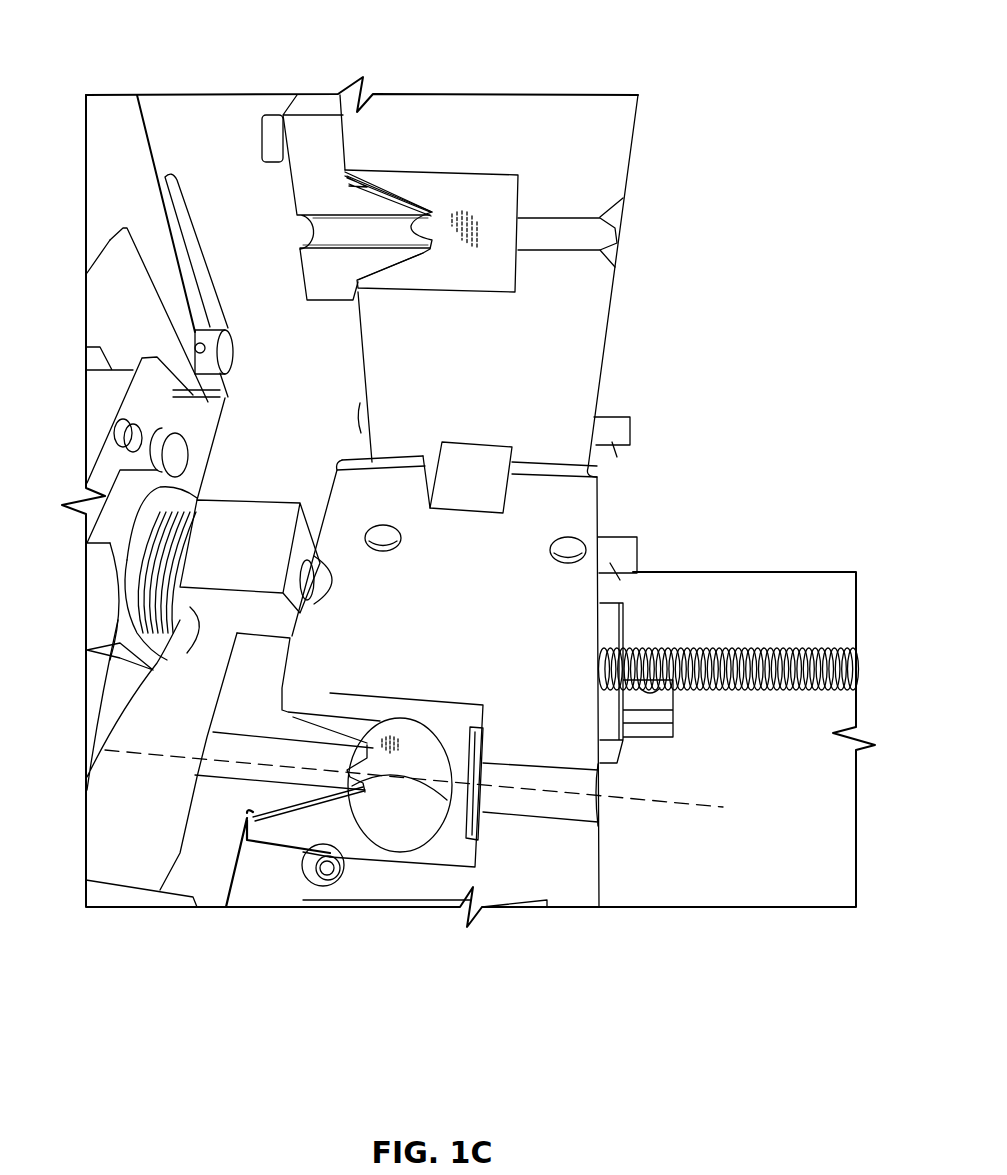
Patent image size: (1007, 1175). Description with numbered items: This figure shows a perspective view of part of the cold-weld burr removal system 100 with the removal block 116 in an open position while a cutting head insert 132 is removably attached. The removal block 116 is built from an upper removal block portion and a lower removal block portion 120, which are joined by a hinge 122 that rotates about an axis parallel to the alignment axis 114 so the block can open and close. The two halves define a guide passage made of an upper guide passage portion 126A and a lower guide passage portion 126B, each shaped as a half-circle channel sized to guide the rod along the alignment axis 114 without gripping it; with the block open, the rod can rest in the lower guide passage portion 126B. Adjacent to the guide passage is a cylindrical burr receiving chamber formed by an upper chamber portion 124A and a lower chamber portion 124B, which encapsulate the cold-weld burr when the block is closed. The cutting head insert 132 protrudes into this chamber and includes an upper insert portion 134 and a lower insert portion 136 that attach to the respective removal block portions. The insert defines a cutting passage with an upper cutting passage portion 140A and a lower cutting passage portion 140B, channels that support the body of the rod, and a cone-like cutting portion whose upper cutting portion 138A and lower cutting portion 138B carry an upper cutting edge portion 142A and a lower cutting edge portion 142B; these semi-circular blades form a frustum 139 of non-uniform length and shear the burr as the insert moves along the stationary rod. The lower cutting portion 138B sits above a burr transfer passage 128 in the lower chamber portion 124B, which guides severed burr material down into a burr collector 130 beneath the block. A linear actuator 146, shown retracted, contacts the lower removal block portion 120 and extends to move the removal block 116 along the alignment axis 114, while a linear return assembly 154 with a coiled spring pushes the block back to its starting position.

The cold-weld burr removal system 100 is at (100, 42).
The alignment axis 114 is at (693, 808).
The removal block 116 is at (567, 527).
The lower removal block portion 120 is at (577, 647).
The hinge 122 is at (487, 470).
The upper chamber portion 124A is at (477, 248).
The lower chamber portion 124B is at (453, 853).
The upper guide passage portion 126A is at (572, 234).
The lower guide passage portion 126B is at (537, 810).
The burr transfer passage 128 is at (417, 767).
The burr collector 130 is at (397, 820).
The cutting head insert 132 is at (307, 183).
The upper insert portion 134 is at (313, 262).
The lower insert portion 136 is at (243, 710).
The upper cutting portion 138A is at (385, 267).
The lower cutting portion 138B is at (307, 735).
The frustum 139 is at (408, 197).
The upper cutting passage portion 140A is at (363, 242).
The lower cutting passage portion 140B is at (235, 775).
The upper cutting edge portion 142A is at (427, 220).
The lower cutting edge portion 142B is at (365, 742).
The linear actuator 146 is at (223, 543).
The linear return assembly 154 is at (733, 647).